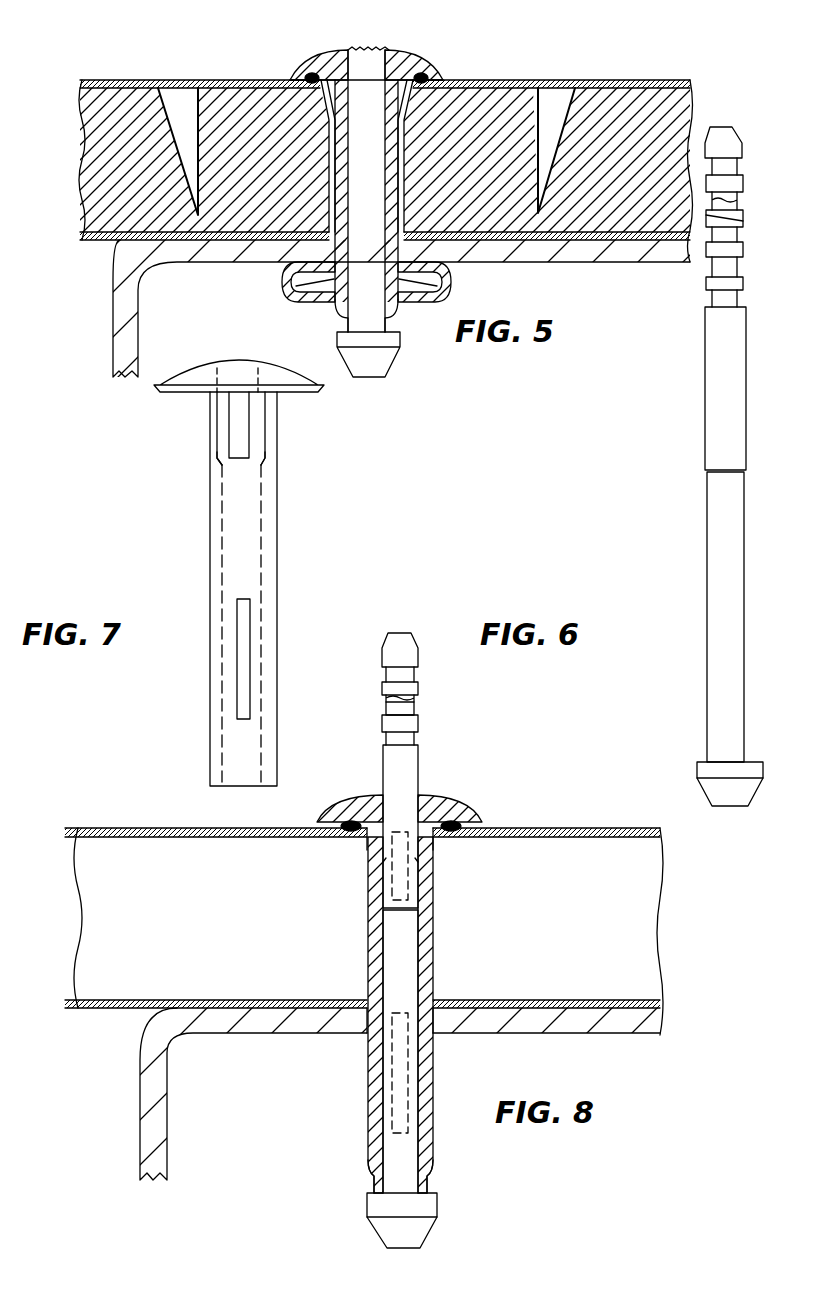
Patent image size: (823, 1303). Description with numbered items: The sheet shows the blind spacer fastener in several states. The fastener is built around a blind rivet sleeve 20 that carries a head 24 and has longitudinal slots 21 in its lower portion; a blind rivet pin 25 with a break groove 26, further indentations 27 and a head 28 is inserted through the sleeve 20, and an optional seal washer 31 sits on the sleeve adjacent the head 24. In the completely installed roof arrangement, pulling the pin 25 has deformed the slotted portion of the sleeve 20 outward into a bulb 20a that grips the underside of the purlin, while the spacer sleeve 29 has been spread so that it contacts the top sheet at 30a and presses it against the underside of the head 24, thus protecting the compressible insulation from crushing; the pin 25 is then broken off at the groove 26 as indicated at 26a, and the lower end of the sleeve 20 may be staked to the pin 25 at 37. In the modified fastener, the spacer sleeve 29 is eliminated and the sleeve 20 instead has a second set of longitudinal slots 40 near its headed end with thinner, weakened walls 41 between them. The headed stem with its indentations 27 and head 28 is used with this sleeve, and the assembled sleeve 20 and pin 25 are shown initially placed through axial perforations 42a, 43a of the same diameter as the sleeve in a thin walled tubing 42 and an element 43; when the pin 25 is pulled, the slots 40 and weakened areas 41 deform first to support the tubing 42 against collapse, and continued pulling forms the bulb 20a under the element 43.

In FIG. 5, the blind rivet sleeve 20 is at (402, 185).
In FIG. 7, the blind rivet sleeve 20 is at (278, 548).
In FIG. 8, the blind rivet sleeve 20 is at (434, 985).
In FIG. 5, the bulb 20a is at (452, 291).
In FIG. 7, the longitudinal slots 21 is at (246, 652).
In FIG. 8, the longitudinal slots 21 is at (408, 1070).
In FIG. 5, the head 24 is at (395, 52).
In FIG. 7, the head 24 is at (180, 380).
In FIG. 8, the head 24 is at (432, 800).
In FIG. 5, the blind rivet pin 25 is at (362, 193).
In FIG. 6, the blind rivet pin 25 is at (716, 577).
In FIG. 8, the blind rivet pin 25 is at (408, 947).
In FIG. 6, the break groove 26 is at (708, 470).
In FIG. 8, the break groove 26 is at (420, 912).
In FIG. 5, the break-off point 26a is at (380, 50).
In FIG. 6, the indentations 27 is at (712, 266).
In FIG. 8, the indentations 27 is at (416, 742).
In FIG. 5, the head 28 is at (400, 362).
In FIG. 6, the head 28 is at (697, 771).
In FIG. 8, the head 28 is at (437, 1208).
In FIG. 5, the spacer sleeve 29 is at (242, 82).
In FIG. 5, the contact with top sheet 30a is at (406, 108).
In FIG. 5, the seal washer 31 is at (424, 78).
In FIG. 8, the seal washer 31 is at (466, 820).
In FIG. 5, the staking 37 is at (398, 324).
In FIG. 8, the staking 37 is at (430, 1178).
In FIG. 7, the second set of longitudinal slots 40 is at (240, 432).
In FIG. 8, the second set of longitudinal slots 40 is at (392, 890).
In FIG. 7, the weakened areas 41 is at (262, 410).
In FIG. 8, the weakened areas 41 is at (428, 872).
In FIG. 8, the thin walled tubing 42 is at (617, 830).
In FIG. 8, the axial perforation 42a is at (366, 846).
In FIG. 8, the element 43 is at (523, 1035).
In FIG. 8, the axial perforation 43a is at (371, 1050).